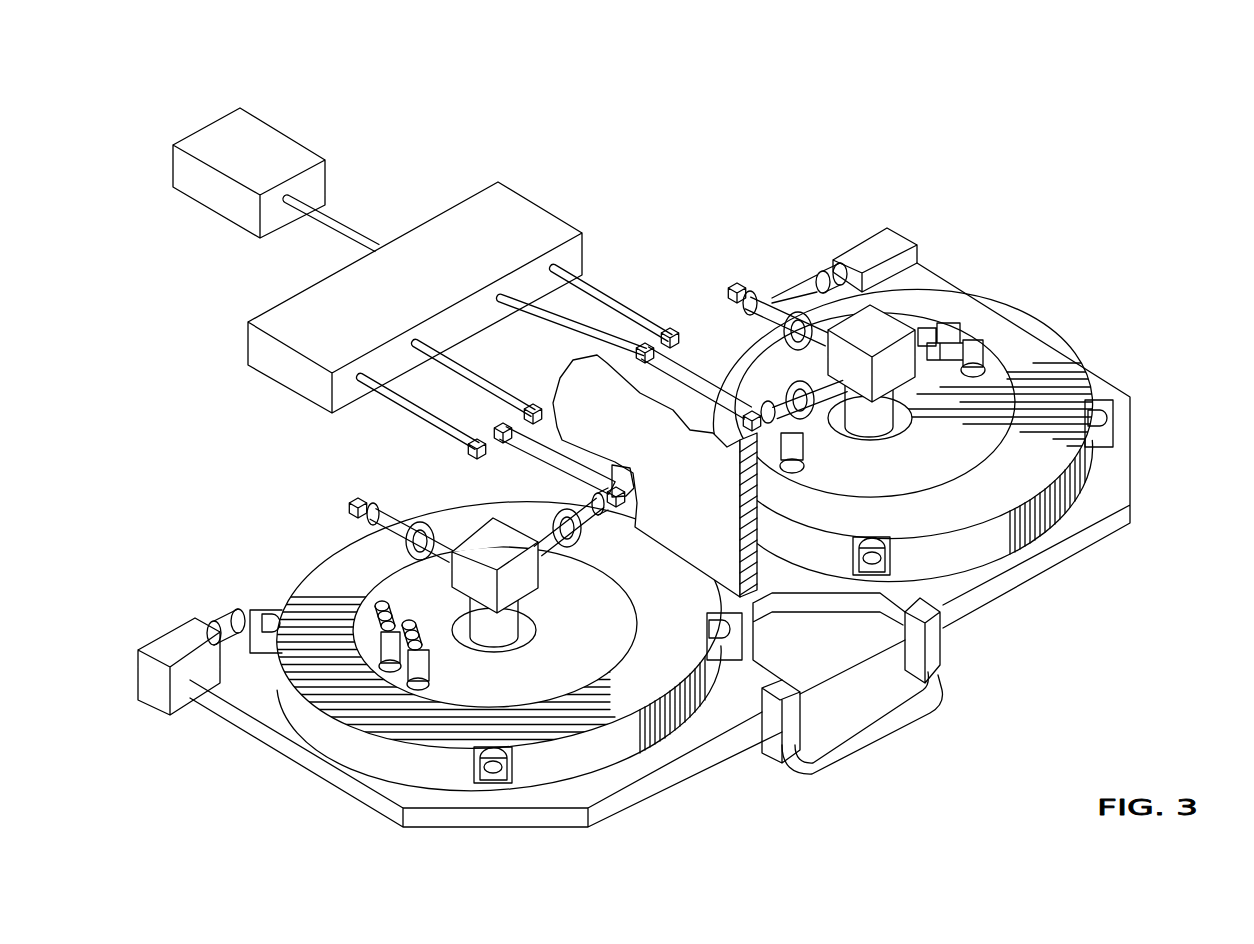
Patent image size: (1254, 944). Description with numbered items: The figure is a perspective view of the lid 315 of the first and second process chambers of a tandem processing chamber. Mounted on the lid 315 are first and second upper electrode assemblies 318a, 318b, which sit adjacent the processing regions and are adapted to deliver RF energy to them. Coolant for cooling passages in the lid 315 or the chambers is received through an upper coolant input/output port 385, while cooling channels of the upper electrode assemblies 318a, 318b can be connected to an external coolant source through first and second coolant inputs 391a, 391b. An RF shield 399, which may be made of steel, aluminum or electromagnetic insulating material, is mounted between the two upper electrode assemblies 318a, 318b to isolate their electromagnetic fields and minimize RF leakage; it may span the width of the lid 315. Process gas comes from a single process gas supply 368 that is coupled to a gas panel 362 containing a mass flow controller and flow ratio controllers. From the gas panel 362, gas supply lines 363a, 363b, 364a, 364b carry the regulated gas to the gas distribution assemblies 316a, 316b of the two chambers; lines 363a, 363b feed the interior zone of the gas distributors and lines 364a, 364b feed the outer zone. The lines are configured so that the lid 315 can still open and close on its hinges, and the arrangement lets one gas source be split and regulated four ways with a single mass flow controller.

The lid 315 is at (1062, 568).
The gas distribution assembly 316a is at (523, 580).
The gas distribution assembly 316b is at (892, 372).
The upper electrode assembly 318a is at (393, 743).
The upper electrode assembly 318b is at (980, 535).
The gas panel 362 is at (432, 294).
The gas supply line 363a is at (387, 394).
The gas supply line 363b is at (522, 312).
The gas supply line 364a is at (440, 358).
The gas supply line 364b is at (630, 303).
The process gas supply 368 is at (223, 140).
The upper coolant input/output port 385 is at (633, 478).
The coolant input 391a is at (383, 603).
The coolant input 391b is at (928, 328).
The RF shield 399 is at (760, 586).